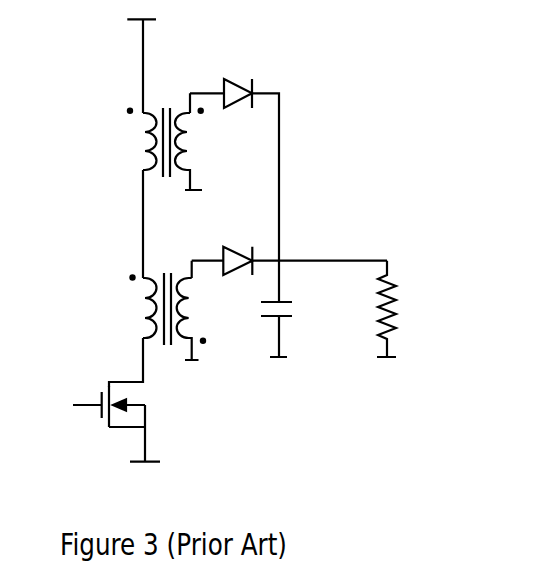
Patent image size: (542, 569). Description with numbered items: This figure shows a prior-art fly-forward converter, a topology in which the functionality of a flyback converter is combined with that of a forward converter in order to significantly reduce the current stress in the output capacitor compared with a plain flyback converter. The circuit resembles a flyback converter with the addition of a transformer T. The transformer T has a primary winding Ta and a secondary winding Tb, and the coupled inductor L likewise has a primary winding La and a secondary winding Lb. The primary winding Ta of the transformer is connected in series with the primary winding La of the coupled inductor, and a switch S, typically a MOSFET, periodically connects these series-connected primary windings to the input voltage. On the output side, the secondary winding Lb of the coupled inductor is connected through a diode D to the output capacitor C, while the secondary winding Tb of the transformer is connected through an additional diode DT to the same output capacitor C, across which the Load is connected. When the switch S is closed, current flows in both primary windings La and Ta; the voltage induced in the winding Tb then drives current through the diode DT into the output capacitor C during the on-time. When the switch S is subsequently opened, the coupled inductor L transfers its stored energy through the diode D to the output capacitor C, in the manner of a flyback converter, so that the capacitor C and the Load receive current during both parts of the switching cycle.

The transformer T is at (148, 134).
The primary winding of the transformer Ta is at (127, 124).
The secondary winding of the transformer Tb is at (205, 149).
The additional diode DT is at (221, 76).
The coupled inductor L is at (148, 299).
The primary winding of the coupled inductor La is at (127, 288).
The secondary winding of the coupled inductor Lb is at (205, 319).
The diode D is at (222, 238).
The switch S is at (94, 424).
The output capacitor C is at (297, 309).
The load Load is at (428, 309).